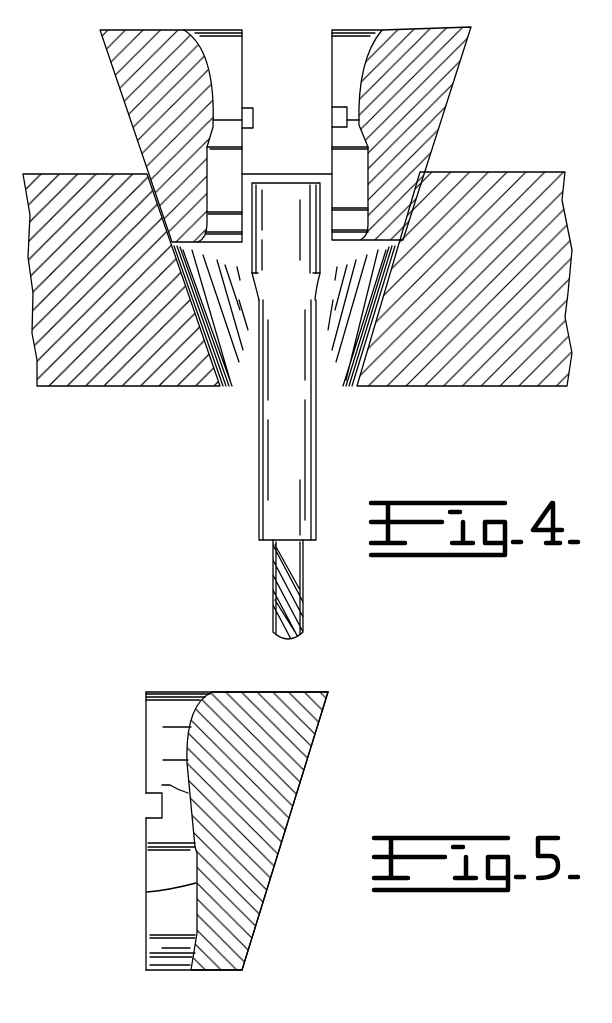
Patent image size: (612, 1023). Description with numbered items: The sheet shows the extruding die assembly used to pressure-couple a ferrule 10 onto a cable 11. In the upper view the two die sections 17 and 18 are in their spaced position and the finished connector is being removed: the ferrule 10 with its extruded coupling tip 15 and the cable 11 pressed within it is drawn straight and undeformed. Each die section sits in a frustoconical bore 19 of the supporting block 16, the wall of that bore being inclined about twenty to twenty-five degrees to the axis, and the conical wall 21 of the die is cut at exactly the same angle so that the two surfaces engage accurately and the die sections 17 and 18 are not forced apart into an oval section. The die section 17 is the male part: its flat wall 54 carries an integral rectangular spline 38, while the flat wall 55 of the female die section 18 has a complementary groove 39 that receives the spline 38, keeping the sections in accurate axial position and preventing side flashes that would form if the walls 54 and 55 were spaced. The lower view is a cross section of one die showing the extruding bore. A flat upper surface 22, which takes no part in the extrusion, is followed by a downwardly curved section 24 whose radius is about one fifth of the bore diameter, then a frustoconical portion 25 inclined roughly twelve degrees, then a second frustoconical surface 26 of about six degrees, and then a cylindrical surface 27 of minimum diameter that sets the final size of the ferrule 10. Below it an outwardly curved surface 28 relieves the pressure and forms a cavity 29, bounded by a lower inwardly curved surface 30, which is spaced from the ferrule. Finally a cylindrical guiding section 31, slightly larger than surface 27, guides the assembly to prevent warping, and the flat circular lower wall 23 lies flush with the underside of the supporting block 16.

In FIG. 4, the ferrule 10 is at (290, 188).
In FIG. 4, the cable 11 is at (300, 612).
In FIG. 4, the coupling tip 15 is at (317, 432).
In FIG. 4, the supporting block 16 is at (90, 386).
In FIG. 4, the die section 17 is at (442, 70).
In FIG. 5, the die section 17 is at (255, 860).
In FIG. 4, the die section 18 is at (118, 63).
In FIG. 4, the frustoconical bore 19 is at (237, 360).
In FIG. 5, the conical wall 21 is at (300, 775).
In FIG. 5, the flat upper surface 22 is at (262, 690).
In FIG. 5, the lower wall 23 is at (223, 972).
In FIG. 5, the downwardly curved section 24 is at (202, 703).
In FIG. 5, the frustoconical portion 25 is at (163, 727).
In FIG. 5, the second frustoconical surface 26 is at (163, 760).
In FIG. 5, the cylindrical surface 27 is at (162, 785).
In FIG. 5, the outwardly curved surface 28 is at (183, 845).
In FIG. 5, the cavity 29 is at (147, 892).
In FIG. 5, the lower inwardly curved surface 30 is at (162, 948).
In FIG. 5, the cylindrical guiding section 31 is at (150, 965).
In FIG. 4, the spline 38 is at (247, 108).
In FIG. 4, the groove 39 is at (340, 117).
In FIG. 5, the groove 39 is at (152, 807).
In FIG. 4, the wall 54 is at (242, 52).
In FIG. 4, the flat wall 55 is at (332, 60).